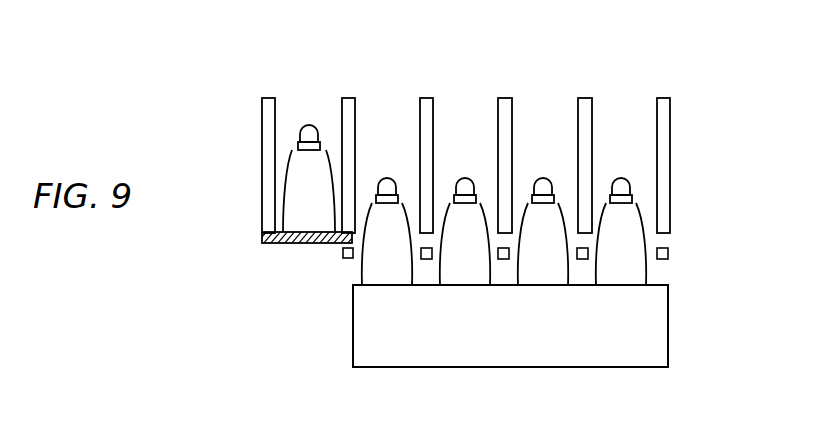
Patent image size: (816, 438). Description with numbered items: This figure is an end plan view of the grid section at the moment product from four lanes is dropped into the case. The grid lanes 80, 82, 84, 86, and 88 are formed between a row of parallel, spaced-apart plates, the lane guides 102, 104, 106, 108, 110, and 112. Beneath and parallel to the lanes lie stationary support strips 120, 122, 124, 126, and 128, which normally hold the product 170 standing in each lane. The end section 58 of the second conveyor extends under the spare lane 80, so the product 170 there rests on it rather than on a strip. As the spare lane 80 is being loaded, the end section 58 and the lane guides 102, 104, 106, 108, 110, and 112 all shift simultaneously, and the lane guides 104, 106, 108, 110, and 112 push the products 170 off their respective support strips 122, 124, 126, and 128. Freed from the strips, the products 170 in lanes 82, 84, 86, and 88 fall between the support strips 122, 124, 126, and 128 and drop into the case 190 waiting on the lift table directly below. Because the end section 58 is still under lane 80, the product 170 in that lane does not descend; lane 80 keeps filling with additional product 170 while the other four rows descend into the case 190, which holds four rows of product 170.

The end section 58 is at (273, 245).
The grid lane 80 is at (312, 114).
The grid lane 82 is at (390, 114).
The grid lane 84 is at (468, 114).
The grid lane 86 is at (547, 114).
The grid lane 88 is at (659, 161).
The lane guide 102 is at (267, 97).
The lane guide 104 is at (347, 97).
The lane guide 106 is at (425, 97).
The lane guide 108 is at (504, 97).
The lane guide 110 is at (584, 97).
The lane guide 112 is at (662, 97).
The support strip 120 is at (346, 259).
The support strip 122 is at (425, 260).
The support strip 124 is at (503, 260).
The support strip 126 is at (582, 260).
The support strip 128 is at (662, 260).
The product 170 is at (641, 217).
The case 190 is at (353, 356).